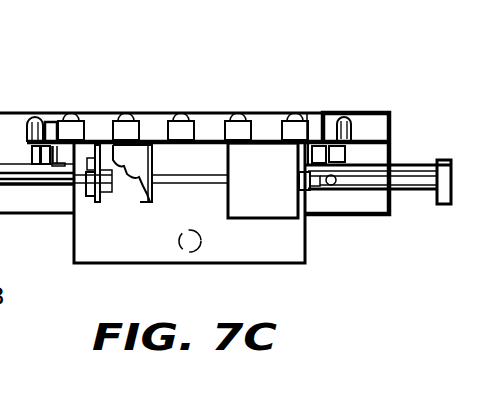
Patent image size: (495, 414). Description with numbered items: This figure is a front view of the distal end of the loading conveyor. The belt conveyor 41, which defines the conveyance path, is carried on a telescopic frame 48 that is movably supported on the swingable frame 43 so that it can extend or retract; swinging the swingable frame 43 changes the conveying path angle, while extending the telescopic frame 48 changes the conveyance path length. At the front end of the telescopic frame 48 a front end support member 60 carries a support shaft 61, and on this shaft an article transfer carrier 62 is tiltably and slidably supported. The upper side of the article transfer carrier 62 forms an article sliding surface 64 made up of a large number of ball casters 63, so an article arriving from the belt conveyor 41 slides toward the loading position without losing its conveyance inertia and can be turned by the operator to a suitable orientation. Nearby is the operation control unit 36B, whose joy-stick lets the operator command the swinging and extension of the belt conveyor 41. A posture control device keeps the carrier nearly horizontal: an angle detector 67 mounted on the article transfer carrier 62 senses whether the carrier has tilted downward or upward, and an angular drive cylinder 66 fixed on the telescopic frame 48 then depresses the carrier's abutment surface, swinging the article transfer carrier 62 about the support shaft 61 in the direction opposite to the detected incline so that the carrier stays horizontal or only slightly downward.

The operation control unit 36B is at (258, 189).
The belt conveyor 41 is at (136, 112).
The swingable frame 43 is at (390, 128).
The telescopic frame 48 is at (351, 134).
The front end support member 60 is at (428, 164).
The support shaft 61 is at (408, 190).
The article transfer carrier 62 is at (254, 110).
The ball casters 63 is at (182, 111).
The sliding surface 64 is at (296, 112).
The angular drive cylinder 66 is at (188, 257).
The angle detector 67 is at (87, 198).